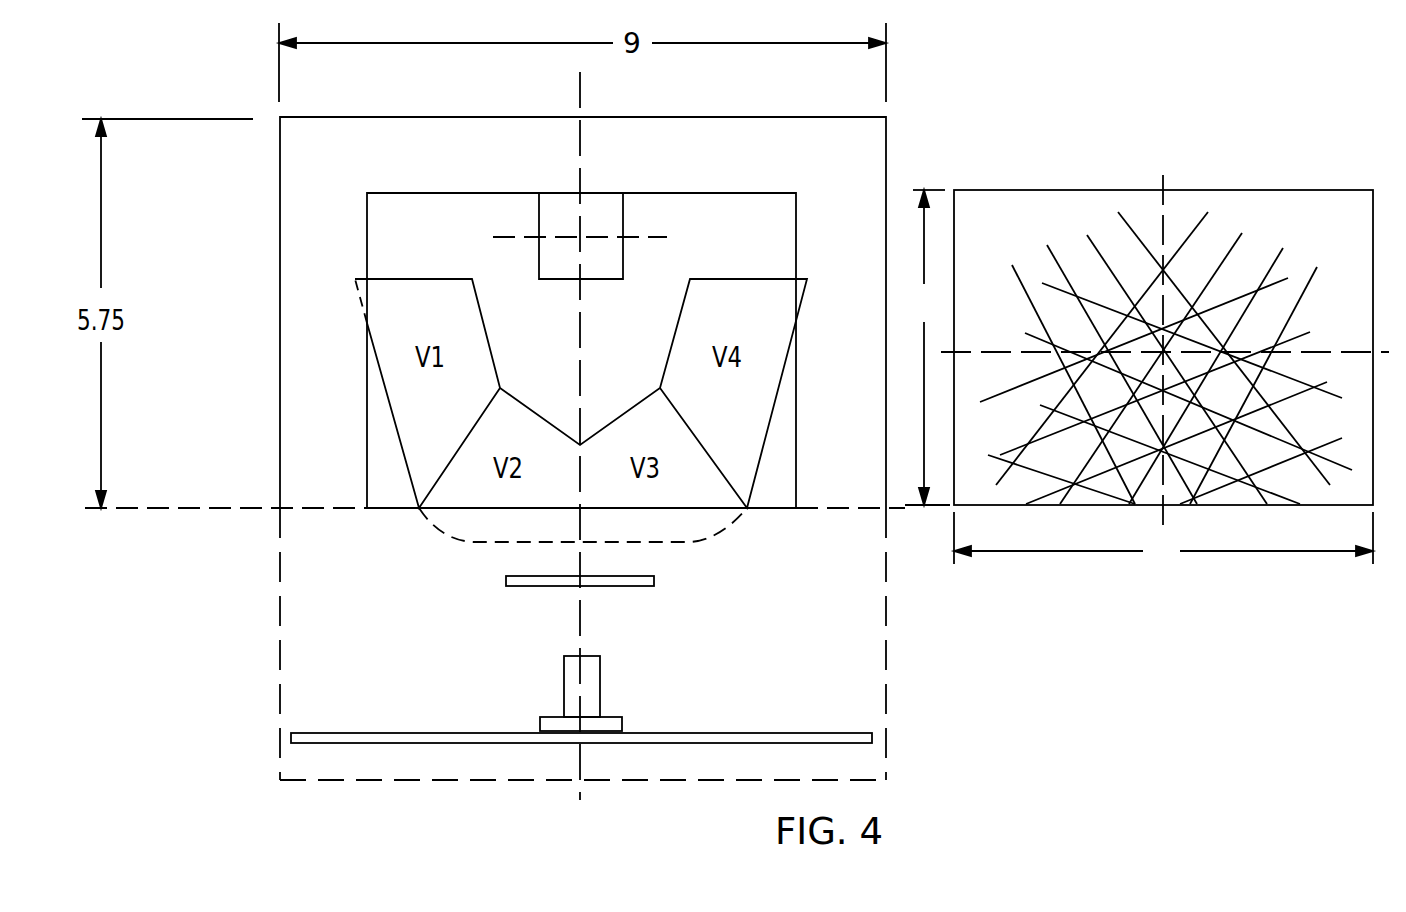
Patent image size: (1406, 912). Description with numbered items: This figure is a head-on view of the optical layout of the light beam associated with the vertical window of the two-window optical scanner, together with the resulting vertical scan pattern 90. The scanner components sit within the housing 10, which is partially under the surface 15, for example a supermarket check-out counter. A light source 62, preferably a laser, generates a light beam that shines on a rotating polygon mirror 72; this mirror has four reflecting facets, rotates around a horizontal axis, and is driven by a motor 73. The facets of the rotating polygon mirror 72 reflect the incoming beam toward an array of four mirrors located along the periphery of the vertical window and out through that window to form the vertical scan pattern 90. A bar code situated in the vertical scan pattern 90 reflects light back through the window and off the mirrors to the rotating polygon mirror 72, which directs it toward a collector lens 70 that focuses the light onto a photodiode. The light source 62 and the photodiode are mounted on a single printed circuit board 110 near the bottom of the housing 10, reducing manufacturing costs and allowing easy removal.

The housing 10 is at (280, 325).
The surface 15 is at (212, 508).
The light source 62 is at (600, 672).
The collector lens 70 is at (639, 575).
The rotating polygon mirror 72 is at (620, 236).
The motor 73 is at (623, 218).
The vertical scan pattern 90 is at (1039, 190).
The printed circuit board 110 is at (419, 733).